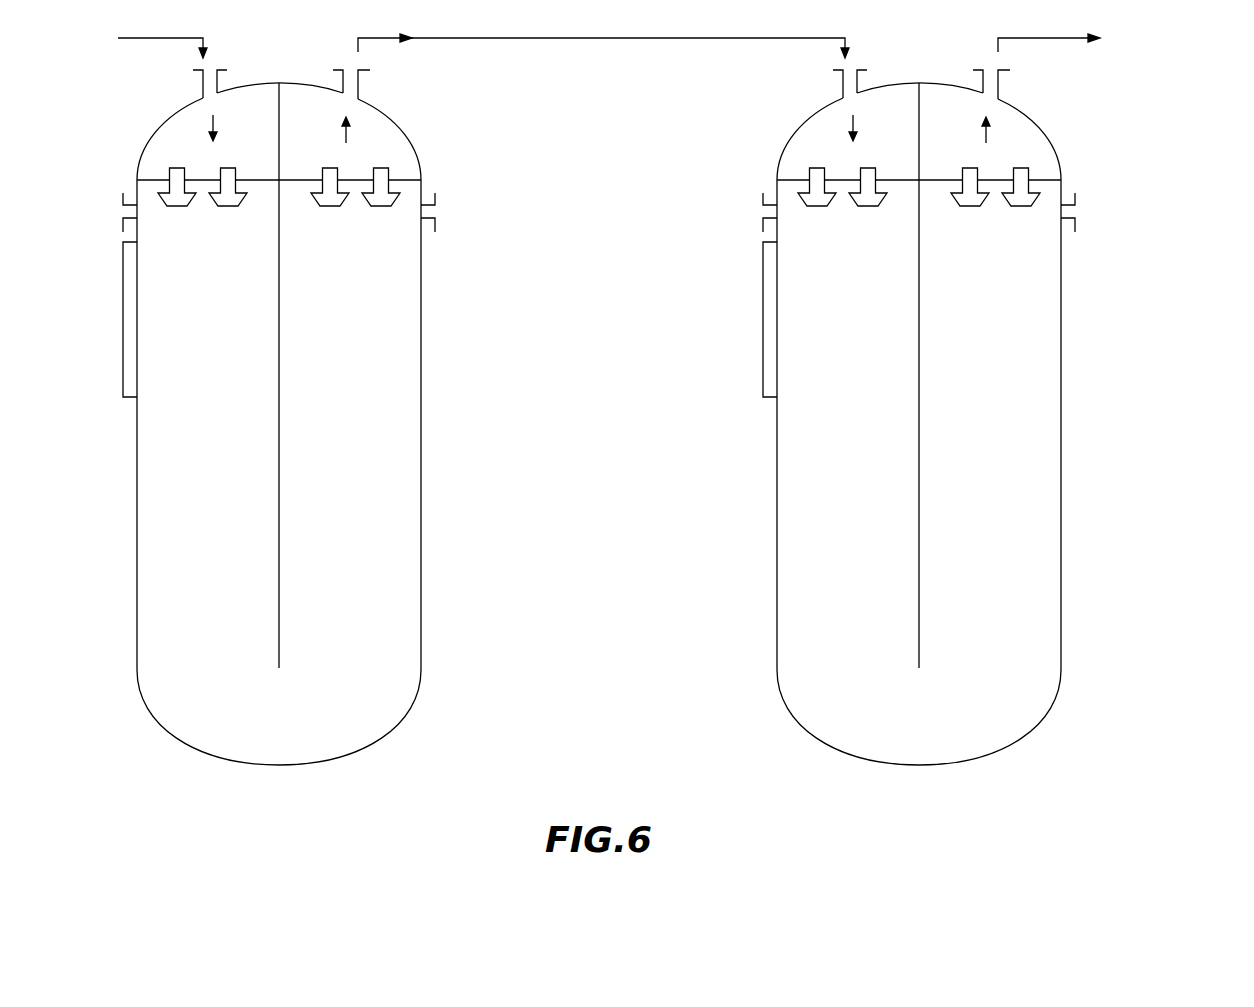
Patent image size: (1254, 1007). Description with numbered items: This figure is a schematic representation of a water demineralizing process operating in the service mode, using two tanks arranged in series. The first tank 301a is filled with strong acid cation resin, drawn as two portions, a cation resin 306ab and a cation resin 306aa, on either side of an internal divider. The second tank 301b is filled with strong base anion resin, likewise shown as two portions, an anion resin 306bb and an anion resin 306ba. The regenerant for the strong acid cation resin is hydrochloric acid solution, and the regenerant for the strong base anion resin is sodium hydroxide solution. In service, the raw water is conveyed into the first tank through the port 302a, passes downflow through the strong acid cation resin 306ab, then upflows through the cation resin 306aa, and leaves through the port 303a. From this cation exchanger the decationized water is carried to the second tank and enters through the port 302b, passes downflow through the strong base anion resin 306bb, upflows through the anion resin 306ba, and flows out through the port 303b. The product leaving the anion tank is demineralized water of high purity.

The tank 301a is at (421, 540).
The tank 301b is at (978, 424).
The port 302a is at (202, 78).
The port 302b is at (774, 83).
The port 303a is at (360, 78).
The port 303b is at (1063, 66).
The strong acid cation resin 306aa is at (395, 503).
The strong acid cation resin 306ab is at (245, 503).
The strong base anion resin 306ba is at (995, 335).
The strong base anion resin 306bb is at (842, 335).